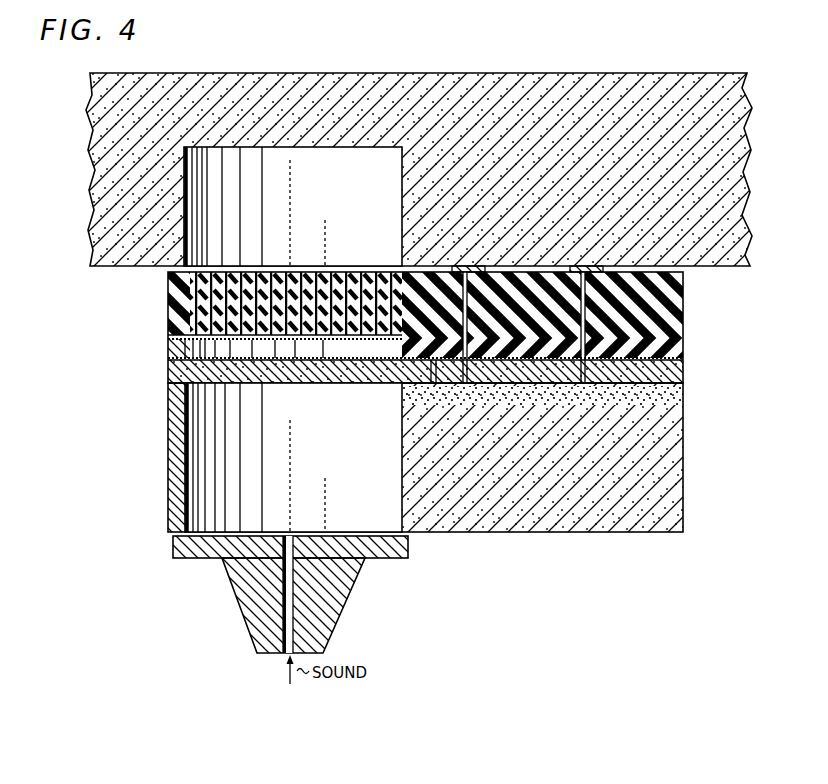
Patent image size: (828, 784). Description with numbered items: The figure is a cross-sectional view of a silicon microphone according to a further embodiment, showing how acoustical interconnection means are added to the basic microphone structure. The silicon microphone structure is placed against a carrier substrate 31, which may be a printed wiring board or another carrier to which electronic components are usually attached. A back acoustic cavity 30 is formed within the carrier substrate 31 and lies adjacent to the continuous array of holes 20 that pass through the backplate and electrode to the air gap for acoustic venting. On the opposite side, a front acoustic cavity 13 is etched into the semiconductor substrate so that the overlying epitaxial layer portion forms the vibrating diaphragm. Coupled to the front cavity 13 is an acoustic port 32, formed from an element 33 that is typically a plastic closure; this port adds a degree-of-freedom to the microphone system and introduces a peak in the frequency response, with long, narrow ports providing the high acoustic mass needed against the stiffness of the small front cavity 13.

The carrier substrate 31 is at (178, 82).
The back acoustic cavity 30 is at (372, 181).
The array of holes 20 is at (390, 274).
The front acoustic cavity 13 is at (216, 464).
The acoustic port 32 is at (285, 612).
The element 33 is at (404, 558).